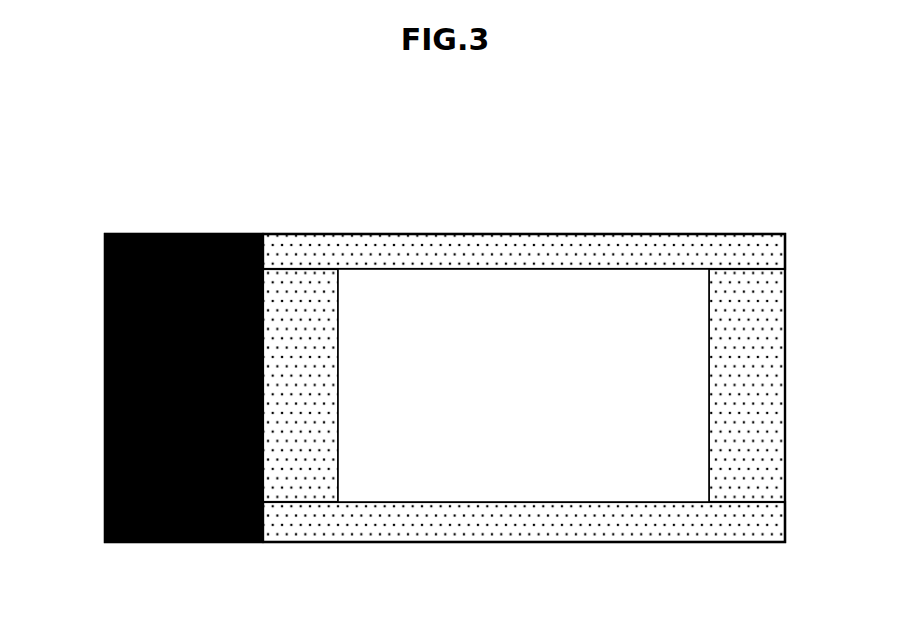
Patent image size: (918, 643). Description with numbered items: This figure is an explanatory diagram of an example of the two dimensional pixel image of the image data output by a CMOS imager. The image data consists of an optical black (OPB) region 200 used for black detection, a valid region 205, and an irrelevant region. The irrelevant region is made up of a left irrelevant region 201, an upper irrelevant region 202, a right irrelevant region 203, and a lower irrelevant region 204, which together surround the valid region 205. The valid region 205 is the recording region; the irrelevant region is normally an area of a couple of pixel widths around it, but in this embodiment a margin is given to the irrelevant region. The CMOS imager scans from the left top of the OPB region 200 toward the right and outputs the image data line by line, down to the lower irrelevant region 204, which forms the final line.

The optical black (OPB) region 200 is at (105, 381).
The left irrelevant region 201 is at (300, 292).
The upper irrelevant region 202 is at (643, 250).
The right irrelevant region 203 is at (770, 383).
The lower irrelevant region 204 is at (643, 522).
The valid region 205 is at (471, 292).